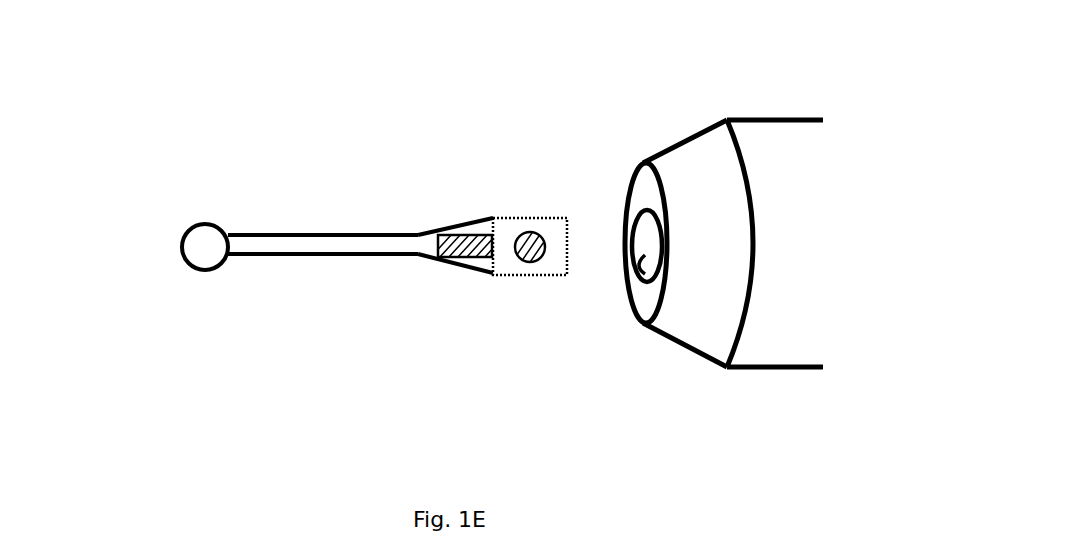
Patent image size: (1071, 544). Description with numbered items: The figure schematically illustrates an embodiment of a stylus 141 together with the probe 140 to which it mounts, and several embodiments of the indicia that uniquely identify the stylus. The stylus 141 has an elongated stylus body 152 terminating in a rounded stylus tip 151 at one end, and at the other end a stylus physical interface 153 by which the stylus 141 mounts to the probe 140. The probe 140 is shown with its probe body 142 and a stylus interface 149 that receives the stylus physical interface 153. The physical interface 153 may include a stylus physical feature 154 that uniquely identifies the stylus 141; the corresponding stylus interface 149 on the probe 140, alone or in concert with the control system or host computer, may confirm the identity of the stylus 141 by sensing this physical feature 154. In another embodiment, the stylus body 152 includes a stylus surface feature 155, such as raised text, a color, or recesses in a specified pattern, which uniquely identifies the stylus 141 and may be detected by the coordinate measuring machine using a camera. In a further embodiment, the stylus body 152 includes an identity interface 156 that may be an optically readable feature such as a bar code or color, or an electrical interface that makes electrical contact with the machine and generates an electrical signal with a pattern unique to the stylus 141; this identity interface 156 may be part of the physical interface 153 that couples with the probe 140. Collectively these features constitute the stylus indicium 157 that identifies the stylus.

The probe 140 is at (742, 115).
The stylus 141 is at (255, 210).
The probe body 142 is at (692, 115).
The stylus interface 149 is at (633, 287).
The stylus tip 151 is at (198, 283).
The stylus body 152 is at (365, 230).
The stylus physical interface 153 is at (468, 264).
The stylus physical feature 154 is at (572, 248).
The stylus surface feature 155 is at (523, 260).
The identity interface 156 is at (458, 257).
The stylus indicium 157 is at (513, 250).